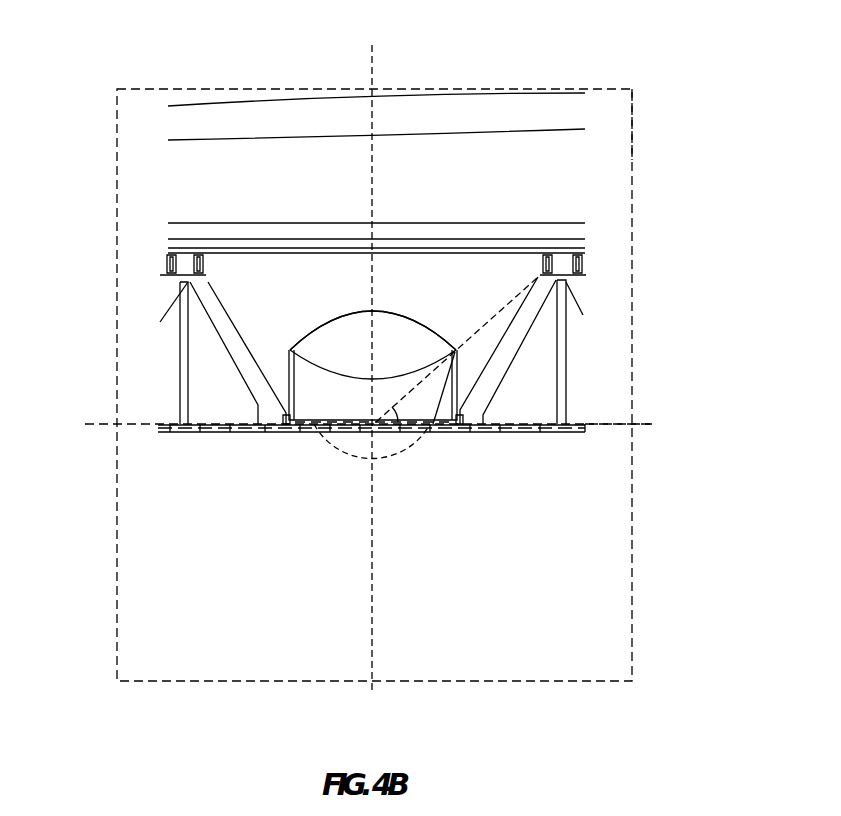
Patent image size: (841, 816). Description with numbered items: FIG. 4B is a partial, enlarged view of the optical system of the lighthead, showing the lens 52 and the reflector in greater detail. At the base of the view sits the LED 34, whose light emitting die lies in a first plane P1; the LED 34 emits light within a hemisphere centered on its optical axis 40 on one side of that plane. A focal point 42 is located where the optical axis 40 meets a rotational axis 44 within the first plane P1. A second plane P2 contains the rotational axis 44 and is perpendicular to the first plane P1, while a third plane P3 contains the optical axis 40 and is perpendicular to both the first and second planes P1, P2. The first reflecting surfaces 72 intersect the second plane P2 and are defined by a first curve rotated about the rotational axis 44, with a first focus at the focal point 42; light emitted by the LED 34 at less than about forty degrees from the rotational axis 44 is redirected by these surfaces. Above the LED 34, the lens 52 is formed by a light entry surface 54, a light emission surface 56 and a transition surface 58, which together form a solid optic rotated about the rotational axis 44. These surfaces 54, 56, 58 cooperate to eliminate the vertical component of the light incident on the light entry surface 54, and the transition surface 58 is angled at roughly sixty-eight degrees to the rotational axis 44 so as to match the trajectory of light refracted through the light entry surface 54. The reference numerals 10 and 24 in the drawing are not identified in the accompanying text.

The camera assembly 10 is at (253, 278).
The windshield 24 is at (565, 75).
The LED 34 is at (375, 425).
The optical axis 40 is at (372, 688).
The focal point 42 is at (372, 426).
The rotational axis 44 is at (100, 424).
The lens 52 is at (403, 318).
The light entry surface 54 is at (322, 368).
The light emission surface 56 is at (342, 312).
The transition surface 58 is at (290, 350).
The first reflecting surfaces 72 is at (517, 320).
The first plane P1 is at (640, 424).
The second plane P2 is at (632, 122).
The third plane P3 is at (375, 80).